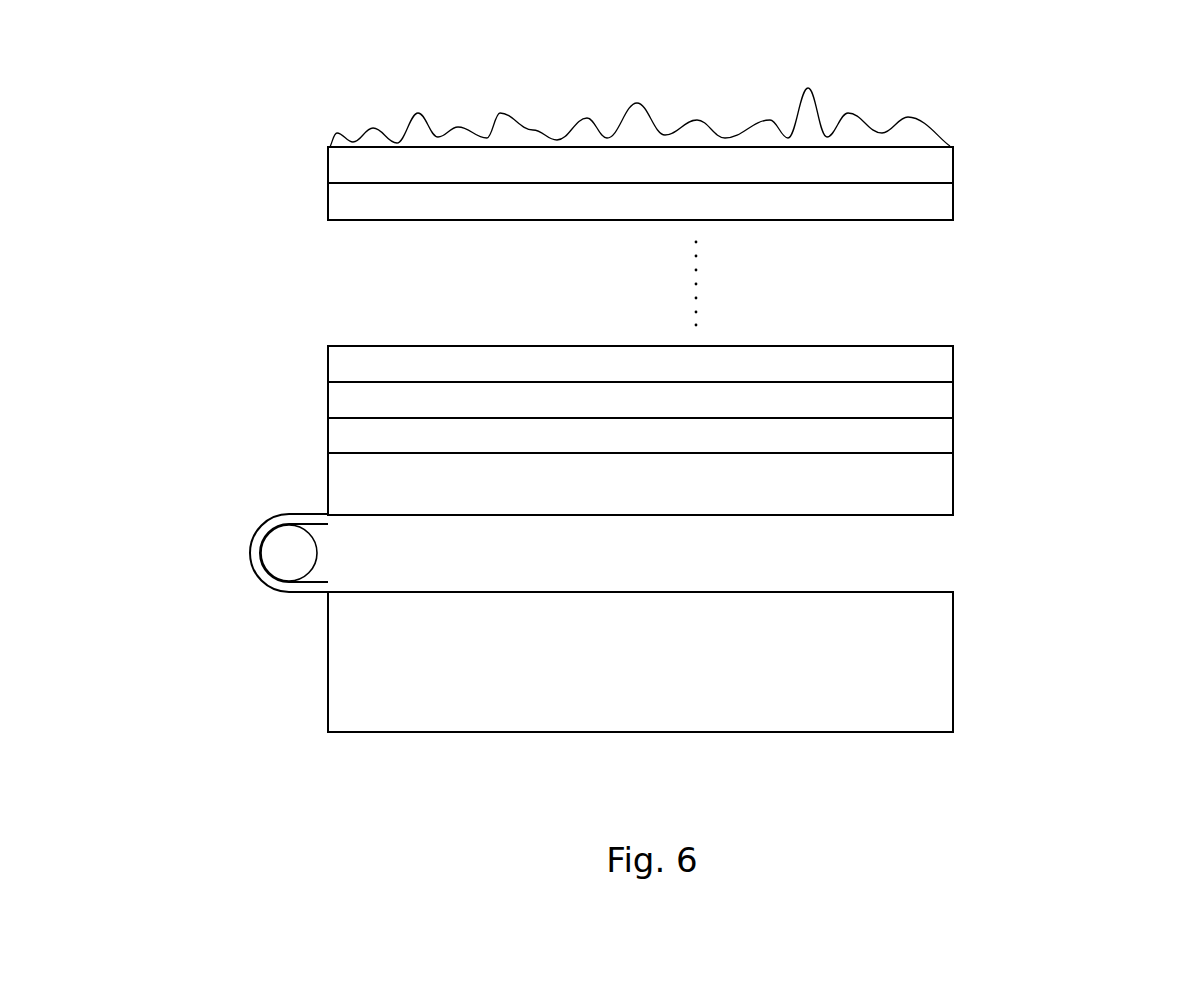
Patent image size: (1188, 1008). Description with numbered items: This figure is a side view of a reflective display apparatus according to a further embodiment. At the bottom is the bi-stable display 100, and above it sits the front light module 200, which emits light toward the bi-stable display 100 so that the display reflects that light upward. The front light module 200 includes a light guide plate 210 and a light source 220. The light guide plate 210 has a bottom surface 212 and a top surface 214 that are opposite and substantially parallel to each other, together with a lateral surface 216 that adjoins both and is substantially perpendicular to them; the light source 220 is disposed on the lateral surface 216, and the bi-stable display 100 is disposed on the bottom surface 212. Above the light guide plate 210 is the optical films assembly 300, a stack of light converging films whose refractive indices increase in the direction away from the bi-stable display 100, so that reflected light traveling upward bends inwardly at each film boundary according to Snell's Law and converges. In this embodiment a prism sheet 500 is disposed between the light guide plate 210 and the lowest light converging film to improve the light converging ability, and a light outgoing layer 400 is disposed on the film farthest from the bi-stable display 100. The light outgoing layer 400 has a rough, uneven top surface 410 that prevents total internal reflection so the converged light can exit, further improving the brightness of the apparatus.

The bi-stable display 100 is at (935, 658).
The front light module 200 is at (514, 542).
The light guide plate 210 is at (549, 542).
The bottom surface 212 is at (465, 595).
The top surface 214 is at (418, 513).
The lateral surface 216 is at (323, 530).
The light source 220 is at (282, 552).
The optical films assembly 300 is at (747, 306).
The light outgoing layer 400 is at (581, 92).
The top surface 410 is at (757, 130).
The prism sheet 500 is at (935, 487).